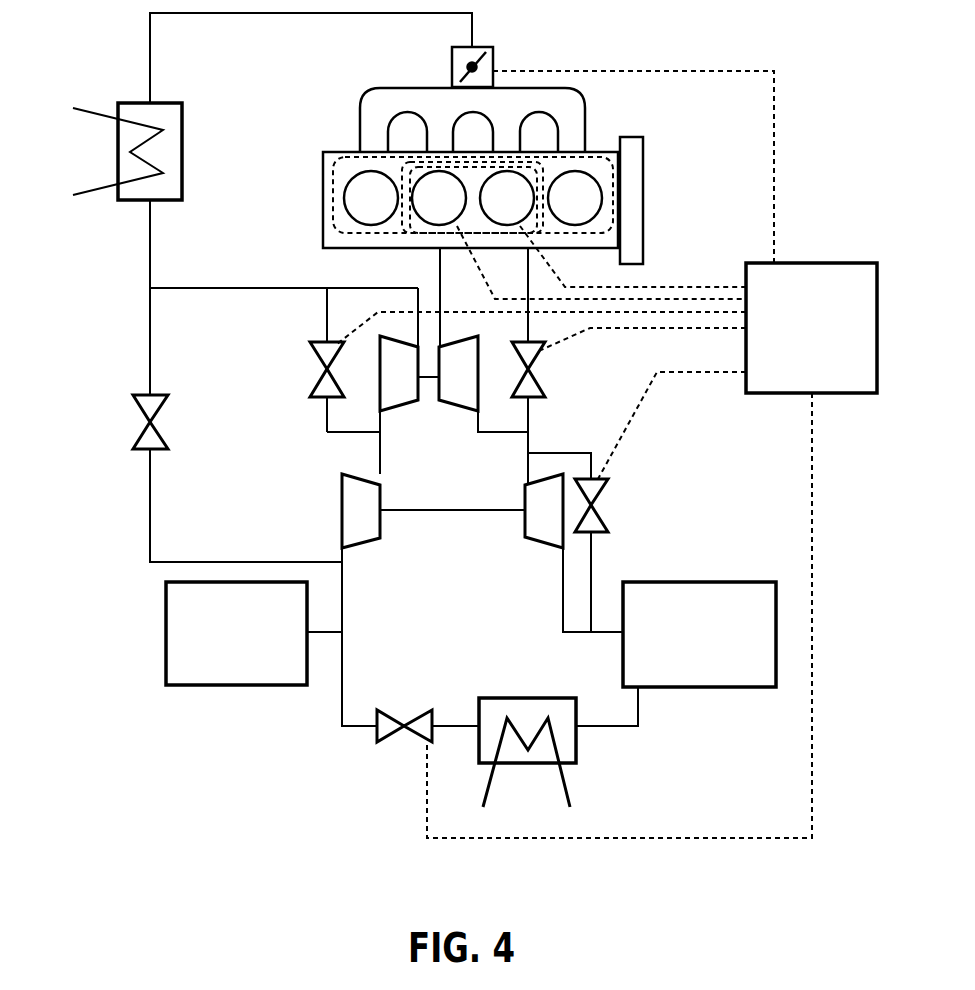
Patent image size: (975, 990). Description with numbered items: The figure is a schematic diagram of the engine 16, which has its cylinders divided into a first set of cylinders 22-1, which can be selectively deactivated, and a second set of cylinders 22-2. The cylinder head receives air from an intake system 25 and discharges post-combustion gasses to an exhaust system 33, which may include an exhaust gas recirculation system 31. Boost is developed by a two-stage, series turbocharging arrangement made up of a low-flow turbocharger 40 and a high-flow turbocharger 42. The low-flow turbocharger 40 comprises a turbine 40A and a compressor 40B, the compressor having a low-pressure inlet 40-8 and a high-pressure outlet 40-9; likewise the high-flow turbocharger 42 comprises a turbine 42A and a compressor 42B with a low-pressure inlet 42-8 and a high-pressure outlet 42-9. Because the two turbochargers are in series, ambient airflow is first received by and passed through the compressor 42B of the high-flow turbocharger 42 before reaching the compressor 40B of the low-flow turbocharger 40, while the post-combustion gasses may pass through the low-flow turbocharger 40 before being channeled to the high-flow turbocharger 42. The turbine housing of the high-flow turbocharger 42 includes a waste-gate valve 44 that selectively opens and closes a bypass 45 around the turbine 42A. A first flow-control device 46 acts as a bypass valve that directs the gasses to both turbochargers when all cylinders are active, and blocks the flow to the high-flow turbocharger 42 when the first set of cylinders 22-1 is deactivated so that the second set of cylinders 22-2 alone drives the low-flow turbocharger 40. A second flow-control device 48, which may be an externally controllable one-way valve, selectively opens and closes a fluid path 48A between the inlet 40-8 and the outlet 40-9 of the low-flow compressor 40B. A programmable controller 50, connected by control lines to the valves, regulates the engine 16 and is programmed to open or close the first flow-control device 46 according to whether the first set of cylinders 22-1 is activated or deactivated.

The engine 16 is at (643, 180).
The first set of cylinders 22-1 is at (506, 167).
The second set of cylinders 22-2 is at (333, 198).
The intake system 25 is at (246, 645).
The exhaust gas recirculation (EGR) system 31 is at (455, 710).
The exhaust system 33 is at (710, 645).
The low-flow turbocharger 40 is at (430, 397).
The turbine of the low-flow turbocharger 40A is at (475, 388).
The compressor of the low-flow turbocharger 40B is at (417, 388).
The inlet of the low-flow compressor 40-8 is at (382, 420).
The outlet of the low-flow compressor 40-9 is at (352, 288).
The high-flow turbocharger 42 is at (417, 511).
The turbine of the high-flow turbocharger 42A is at (561, 522).
The compressor of the high-flow turbocharger 42B is at (377, 522).
The inlet of the high-flow compressor 42-8 is at (343, 553).
The outlet of the high-flow compressor 42-9 is at (380, 453).
The waste-gate valve 44 is at (601, 487).
The bypass 45 is at (591, 565).
The first flow-control device 46 is at (535, 368).
The second flow-control device 48 is at (327, 369).
The fluid path 48A is at (327, 318).
The controller 50 is at (822, 337).